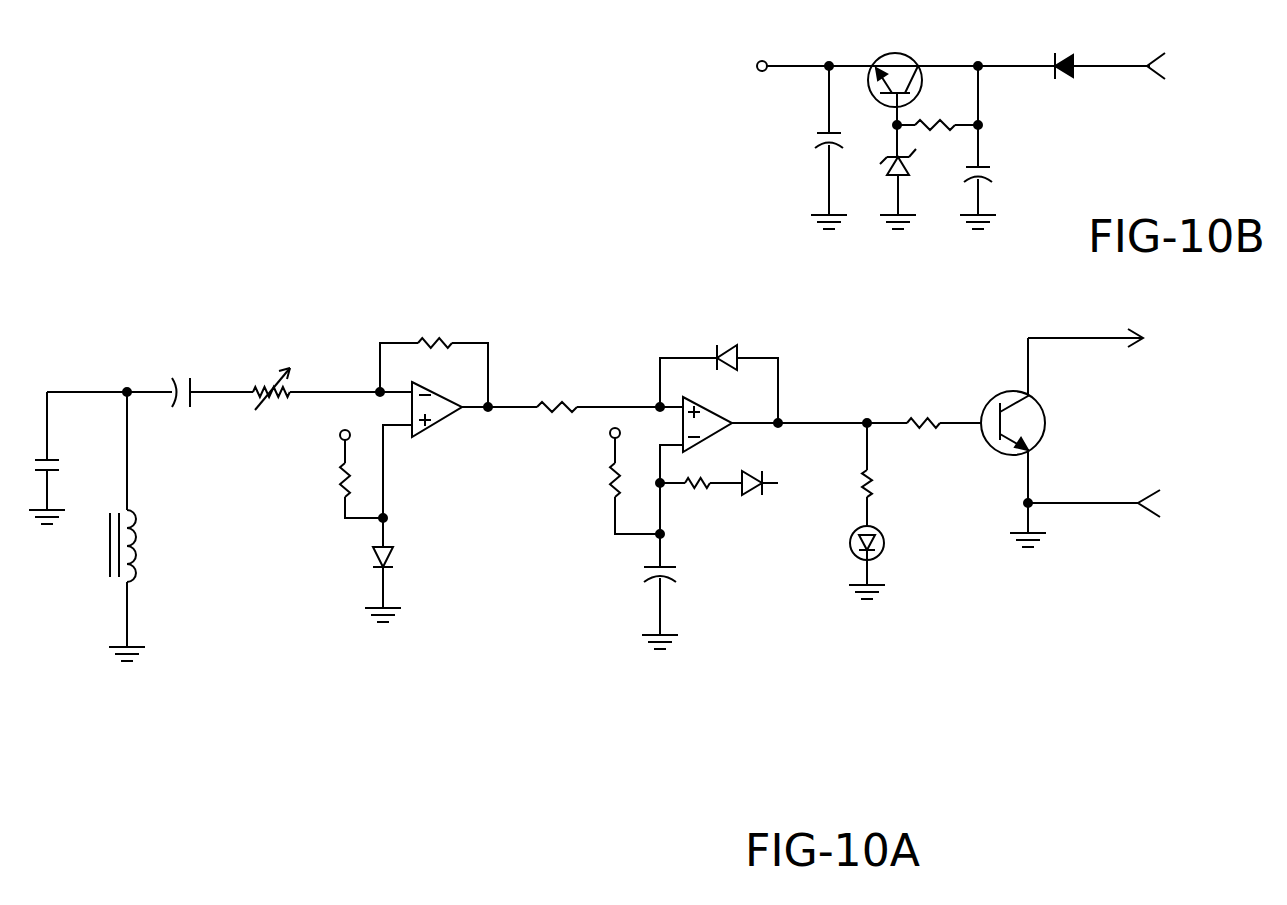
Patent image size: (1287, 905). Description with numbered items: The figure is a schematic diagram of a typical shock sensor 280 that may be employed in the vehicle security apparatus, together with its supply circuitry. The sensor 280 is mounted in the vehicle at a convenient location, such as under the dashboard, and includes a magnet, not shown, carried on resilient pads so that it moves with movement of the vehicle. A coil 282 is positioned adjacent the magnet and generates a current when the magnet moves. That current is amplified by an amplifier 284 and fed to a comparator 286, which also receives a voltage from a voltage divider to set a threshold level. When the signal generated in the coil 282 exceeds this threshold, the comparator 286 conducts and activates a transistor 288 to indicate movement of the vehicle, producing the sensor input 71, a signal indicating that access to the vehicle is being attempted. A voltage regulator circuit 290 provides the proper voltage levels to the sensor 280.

In FIG. 10A, the shock sensor 280 is at (580, 337).
In FIG. 10A, the coil 282 is at (138, 553).
In FIG. 10A, the amplifier 284 is at (412, 383).
In FIG. 10A, the comparator 286 is at (712, 413).
In FIG. 10A, the transistor 288 is at (1005, 397).
In FIG. 10A, the sensor input 71 is at (1084, 336).
In FIG. 10B, the voltage regulator circuit 290 is at (884, 44).